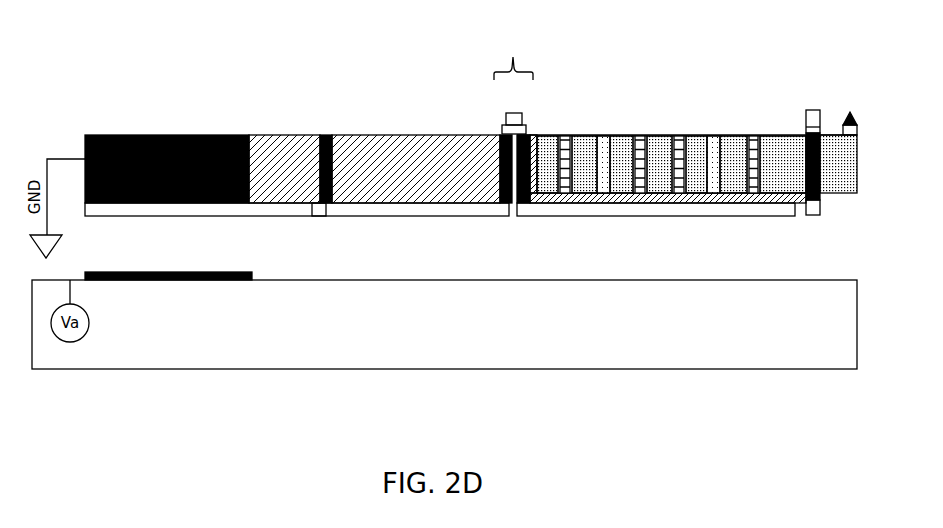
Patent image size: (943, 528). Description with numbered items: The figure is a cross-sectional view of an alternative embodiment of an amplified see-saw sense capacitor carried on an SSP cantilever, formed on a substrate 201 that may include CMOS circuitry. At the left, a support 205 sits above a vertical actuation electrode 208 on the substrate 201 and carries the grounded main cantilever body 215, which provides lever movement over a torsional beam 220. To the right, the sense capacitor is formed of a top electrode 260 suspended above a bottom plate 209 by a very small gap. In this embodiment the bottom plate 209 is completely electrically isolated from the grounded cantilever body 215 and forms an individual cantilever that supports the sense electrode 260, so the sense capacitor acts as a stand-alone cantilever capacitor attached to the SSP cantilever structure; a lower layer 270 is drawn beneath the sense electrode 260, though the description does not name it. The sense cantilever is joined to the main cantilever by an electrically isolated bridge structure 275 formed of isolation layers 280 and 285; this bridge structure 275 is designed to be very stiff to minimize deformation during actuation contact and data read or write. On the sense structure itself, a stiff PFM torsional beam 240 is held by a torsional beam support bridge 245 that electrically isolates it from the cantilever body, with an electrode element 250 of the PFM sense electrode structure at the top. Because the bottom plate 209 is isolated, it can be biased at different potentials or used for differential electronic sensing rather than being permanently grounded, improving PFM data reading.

The substrate 201 is at (438, 332).
The support 205 is at (145, 135).
The vertical actuation electrode 208 is at (220, 281).
The bottom plate 209 is at (655, 217).
The cantilever body 215 is at (447, 218).
The torsional beam 220 is at (318, 218).
The PFM torsional beam 240 is at (814, 216).
The torsional beam support bridge 245 is at (810, 110).
The PFM see-saw sense electrode structure element 250 is at (850, 112).
The top electrode 260 is at (588, 135).
The bottom insulating layer 270 is at (754, 199).
The bridge structure 275 is at (513, 54).
The isolation layer 280 is at (503, 128).
The isolation layer 285 is at (507, 114).